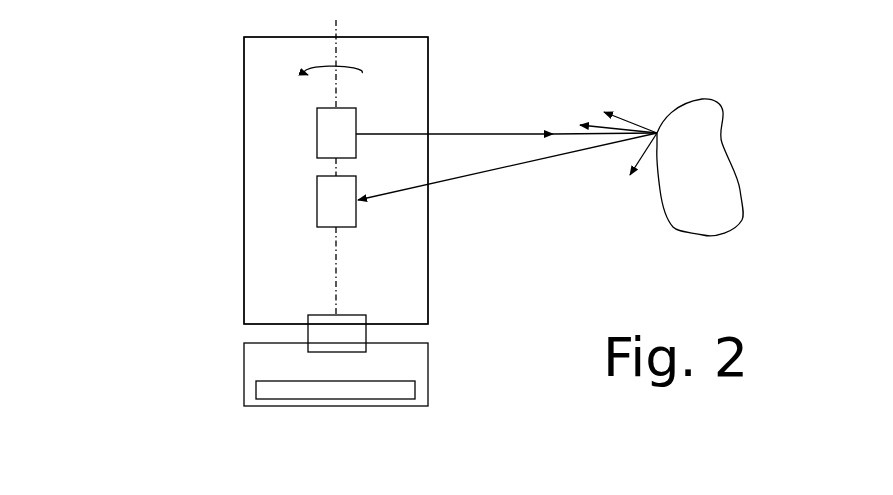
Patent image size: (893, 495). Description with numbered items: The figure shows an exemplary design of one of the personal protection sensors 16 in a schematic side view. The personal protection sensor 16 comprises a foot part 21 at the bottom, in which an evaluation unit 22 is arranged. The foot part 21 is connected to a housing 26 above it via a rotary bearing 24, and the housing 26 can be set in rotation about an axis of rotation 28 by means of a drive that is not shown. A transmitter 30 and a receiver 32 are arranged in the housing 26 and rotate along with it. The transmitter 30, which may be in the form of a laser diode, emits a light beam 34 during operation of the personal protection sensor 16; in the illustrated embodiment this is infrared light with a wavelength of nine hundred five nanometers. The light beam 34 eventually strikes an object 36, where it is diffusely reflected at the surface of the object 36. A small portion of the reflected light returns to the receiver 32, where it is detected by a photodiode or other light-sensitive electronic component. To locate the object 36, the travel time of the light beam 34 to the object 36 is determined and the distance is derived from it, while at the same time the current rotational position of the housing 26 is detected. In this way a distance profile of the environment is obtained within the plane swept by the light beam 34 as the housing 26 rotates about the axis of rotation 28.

The personal protection sensor 16 is at (200, 194).
The foot part 21 is at (428, 362).
The evaluation unit 22 is at (293, 394).
The rotary bearing 24 is at (318, 327).
The housing 26 is at (428, 253).
The axis of rotation 28 is at (337, 53).
The transmitter 30 is at (325, 140).
The receiver 32 is at (323, 194).
The light beam 34 is at (486, 133).
The object 36 is at (735, 176).